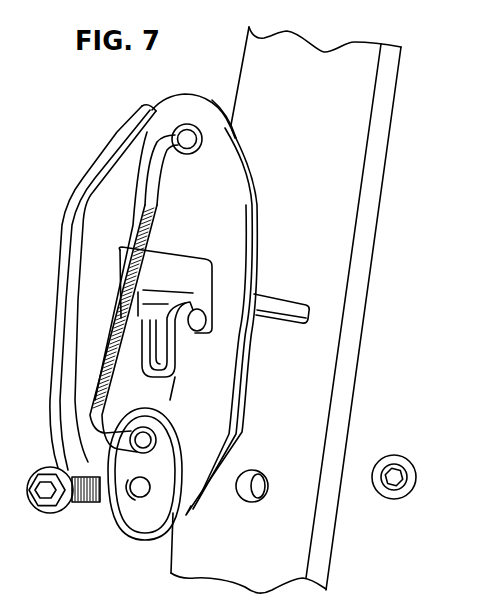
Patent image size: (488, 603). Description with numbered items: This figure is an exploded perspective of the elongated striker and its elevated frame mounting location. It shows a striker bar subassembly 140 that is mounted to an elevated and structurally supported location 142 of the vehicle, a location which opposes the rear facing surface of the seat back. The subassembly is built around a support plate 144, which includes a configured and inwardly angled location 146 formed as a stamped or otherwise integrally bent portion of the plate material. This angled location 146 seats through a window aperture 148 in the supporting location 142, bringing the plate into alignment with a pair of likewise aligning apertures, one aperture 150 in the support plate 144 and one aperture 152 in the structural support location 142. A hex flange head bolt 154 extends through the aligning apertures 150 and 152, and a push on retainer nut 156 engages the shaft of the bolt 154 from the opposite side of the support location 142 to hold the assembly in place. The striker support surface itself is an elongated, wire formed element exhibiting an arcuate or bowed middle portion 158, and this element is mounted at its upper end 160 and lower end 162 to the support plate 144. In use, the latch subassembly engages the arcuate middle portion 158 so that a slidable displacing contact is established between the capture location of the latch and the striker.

The striker bar subassembly 140 is at (69, 135).
The elevated and structurally supported location 142 is at (345, 192).
The support plate 144 is at (228, 198).
The inwardly angled location 146 is at (175, 292).
The window aperture 148 is at (283, 307).
The aperture 150 is at (128, 495).
The aperture 152 is at (241, 503).
The hex flange head bolt 154 is at (62, 508).
The push on retainer nut 156 is at (391, 497).
The arcuate or bowed middle portion 158 is at (117, 332).
The upper end 160 is at (170, 133).
The lower end 162 is at (130, 440).